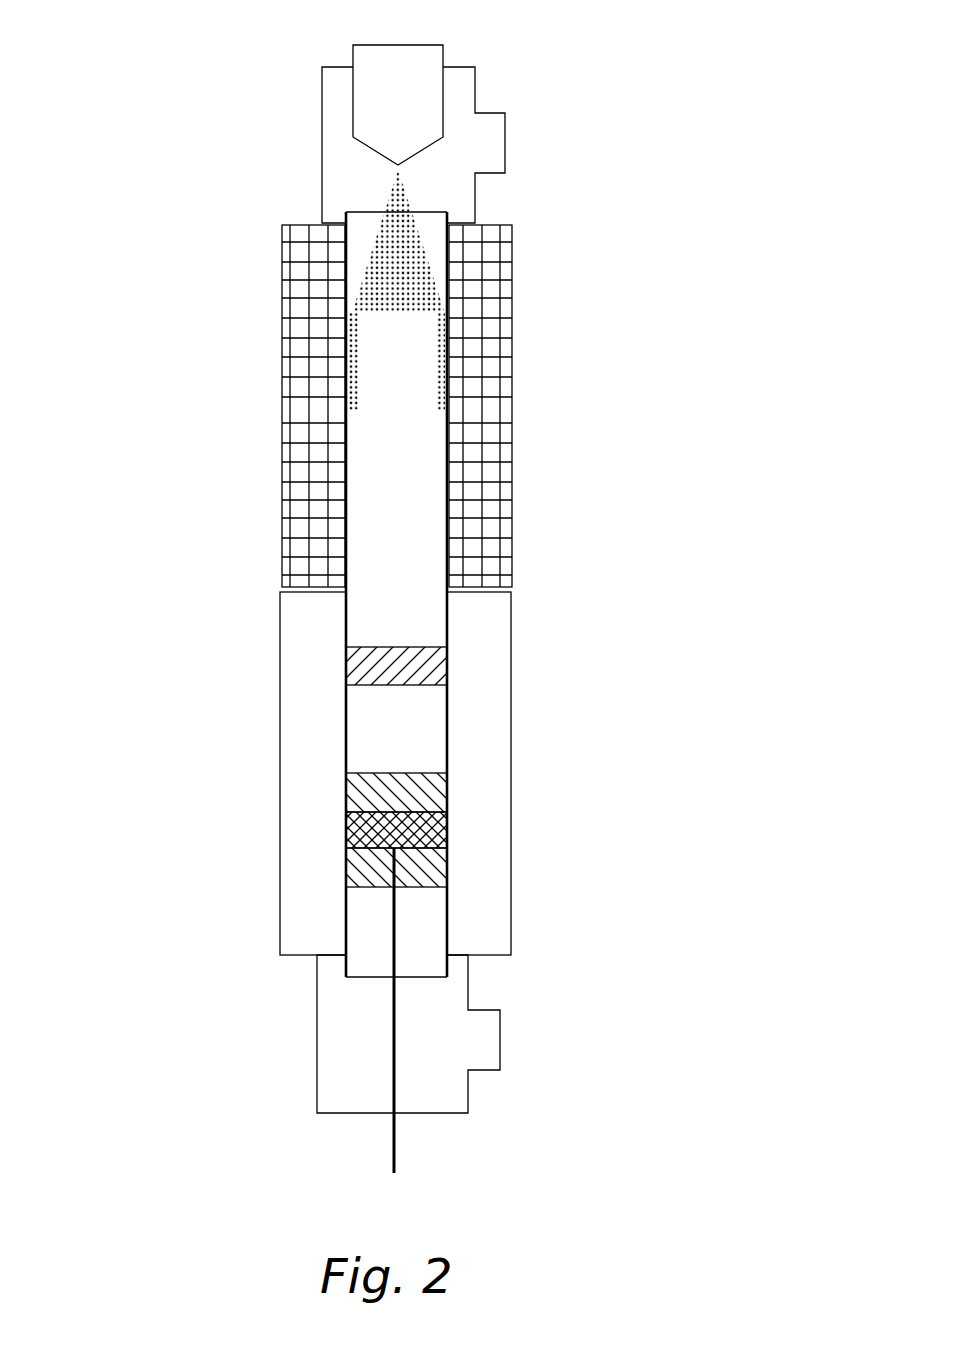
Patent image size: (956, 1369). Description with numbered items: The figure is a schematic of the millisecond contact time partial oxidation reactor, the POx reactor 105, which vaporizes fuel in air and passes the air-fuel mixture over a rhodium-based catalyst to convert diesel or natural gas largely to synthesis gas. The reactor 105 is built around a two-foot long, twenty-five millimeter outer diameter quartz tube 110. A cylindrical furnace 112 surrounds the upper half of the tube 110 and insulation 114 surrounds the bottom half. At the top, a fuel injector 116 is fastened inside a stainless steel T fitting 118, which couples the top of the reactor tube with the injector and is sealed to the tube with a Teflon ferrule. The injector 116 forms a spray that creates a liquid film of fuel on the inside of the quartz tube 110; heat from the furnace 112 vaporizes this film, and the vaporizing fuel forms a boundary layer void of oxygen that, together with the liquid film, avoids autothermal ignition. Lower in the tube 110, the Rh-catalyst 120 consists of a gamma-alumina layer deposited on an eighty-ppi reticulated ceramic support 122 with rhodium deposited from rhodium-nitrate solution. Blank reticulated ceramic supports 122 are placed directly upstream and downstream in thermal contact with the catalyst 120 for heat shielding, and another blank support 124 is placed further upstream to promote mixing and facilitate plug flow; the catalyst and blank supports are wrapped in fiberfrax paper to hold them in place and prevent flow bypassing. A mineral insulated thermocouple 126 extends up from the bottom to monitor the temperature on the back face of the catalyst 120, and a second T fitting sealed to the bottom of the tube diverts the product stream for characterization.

The POx reactor 105 is at (162, 114).
The quartz tube 110 is at (423, 529).
The cylindrical furnace 112 is at (503, 362).
The insulation 114 is at (293, 751).
The fuel injector 116 is at (425, 108).
The stainless steel T fitting 118 is at (460, 98).
The Rh-catalyst 120 is at (435, 838).
The reticulated ceramic support 122 is at (435, 790).
The blank support 124 is at (352, 665).
The mineral insulated thermocouple 126 is at (392, 1048).